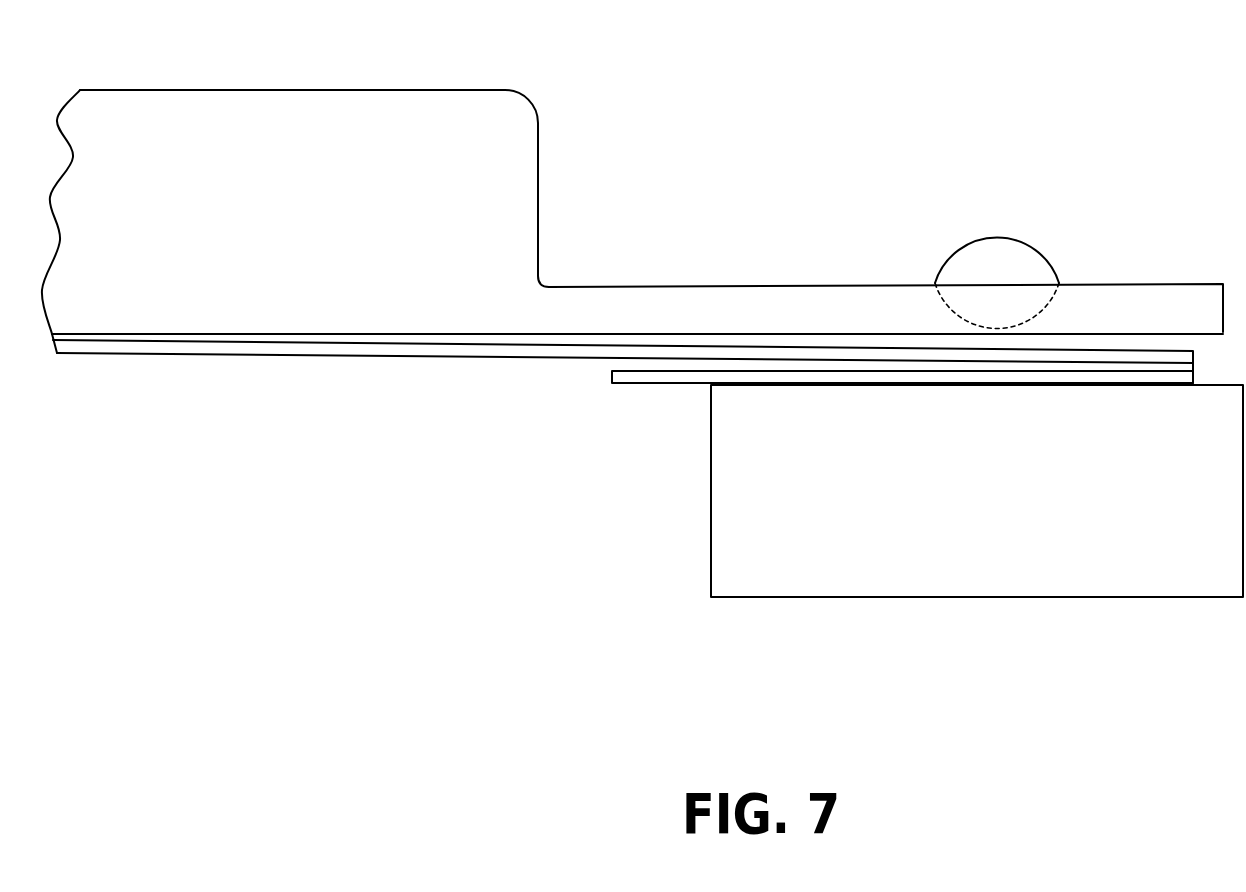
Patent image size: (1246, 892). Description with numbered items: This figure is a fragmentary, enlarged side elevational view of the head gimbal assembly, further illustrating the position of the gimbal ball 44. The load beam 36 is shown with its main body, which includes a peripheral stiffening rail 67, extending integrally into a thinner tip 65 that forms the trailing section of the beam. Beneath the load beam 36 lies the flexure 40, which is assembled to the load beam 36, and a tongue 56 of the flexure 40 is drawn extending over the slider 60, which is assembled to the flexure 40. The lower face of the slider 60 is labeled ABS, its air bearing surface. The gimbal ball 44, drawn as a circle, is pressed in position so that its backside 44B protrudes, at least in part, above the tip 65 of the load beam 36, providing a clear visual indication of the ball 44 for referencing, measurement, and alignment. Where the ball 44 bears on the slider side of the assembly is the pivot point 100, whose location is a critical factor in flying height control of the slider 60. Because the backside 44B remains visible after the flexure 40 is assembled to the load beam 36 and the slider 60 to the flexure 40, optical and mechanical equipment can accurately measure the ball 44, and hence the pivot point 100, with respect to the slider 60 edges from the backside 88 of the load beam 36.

The peripheral stiffening rail 67 is at (345, 107).
The load beam 36 is at (657, 300).
The backside of the load beam 88 is at (876, 285).
The tip 65 is at (1153, 282).
The gimbal ball 44 is at (968, 240).
The backside of the gimbal ball 44B is at (1032, 262).
The flexure 40 is at (357, 342).
The flexure tongue 56 is at (648, 377).
The slider 60 is at (1000, 496).
The air bearing surface ABS is at (822, 598).
The pivot point 100 is at (985, 366).